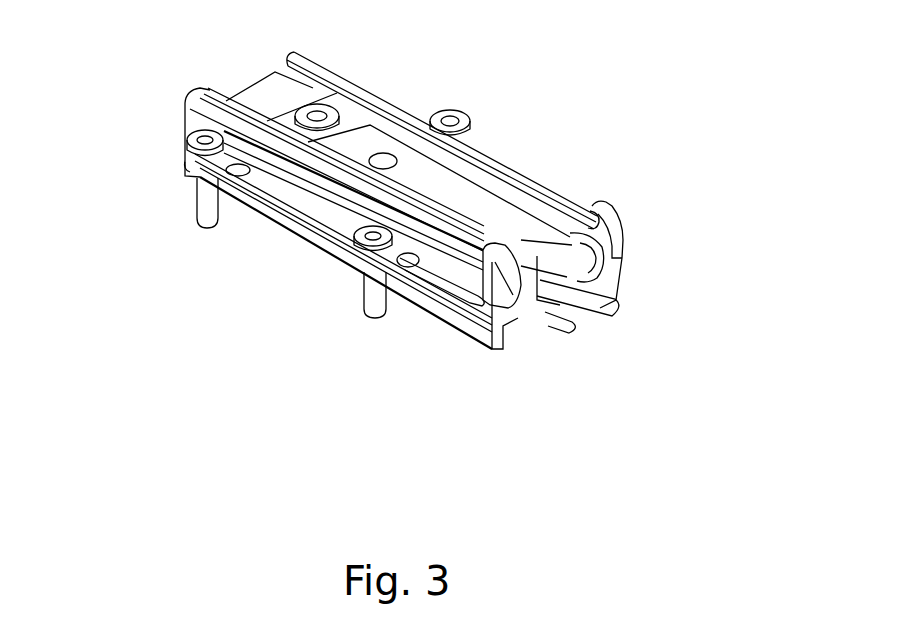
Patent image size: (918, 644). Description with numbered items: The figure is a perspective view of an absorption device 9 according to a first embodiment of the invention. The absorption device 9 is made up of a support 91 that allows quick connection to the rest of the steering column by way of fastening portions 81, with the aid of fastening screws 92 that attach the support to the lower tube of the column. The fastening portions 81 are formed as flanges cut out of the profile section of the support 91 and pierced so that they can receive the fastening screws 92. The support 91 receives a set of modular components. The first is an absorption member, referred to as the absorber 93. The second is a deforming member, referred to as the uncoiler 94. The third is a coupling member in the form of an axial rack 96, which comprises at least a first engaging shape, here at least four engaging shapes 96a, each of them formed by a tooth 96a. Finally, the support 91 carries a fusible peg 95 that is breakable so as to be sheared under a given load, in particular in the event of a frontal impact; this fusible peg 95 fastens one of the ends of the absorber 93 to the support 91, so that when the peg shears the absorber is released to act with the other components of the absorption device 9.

The absorption device 9 is at (423, 249).
The fastening portions (flanges) 81 is at (380, 313).
The support 91 is at (460, 200).
The fastening screws 92 is at (358, 302).
The absorber 93 is at (187, 110).
The uncoiler 94 is at (627, 237).
The fusible peg 95 is at (338, 95).
The axial rack 96 is at (620, 302).
The engaging shapes (teeth) 96a is at (553, 317).